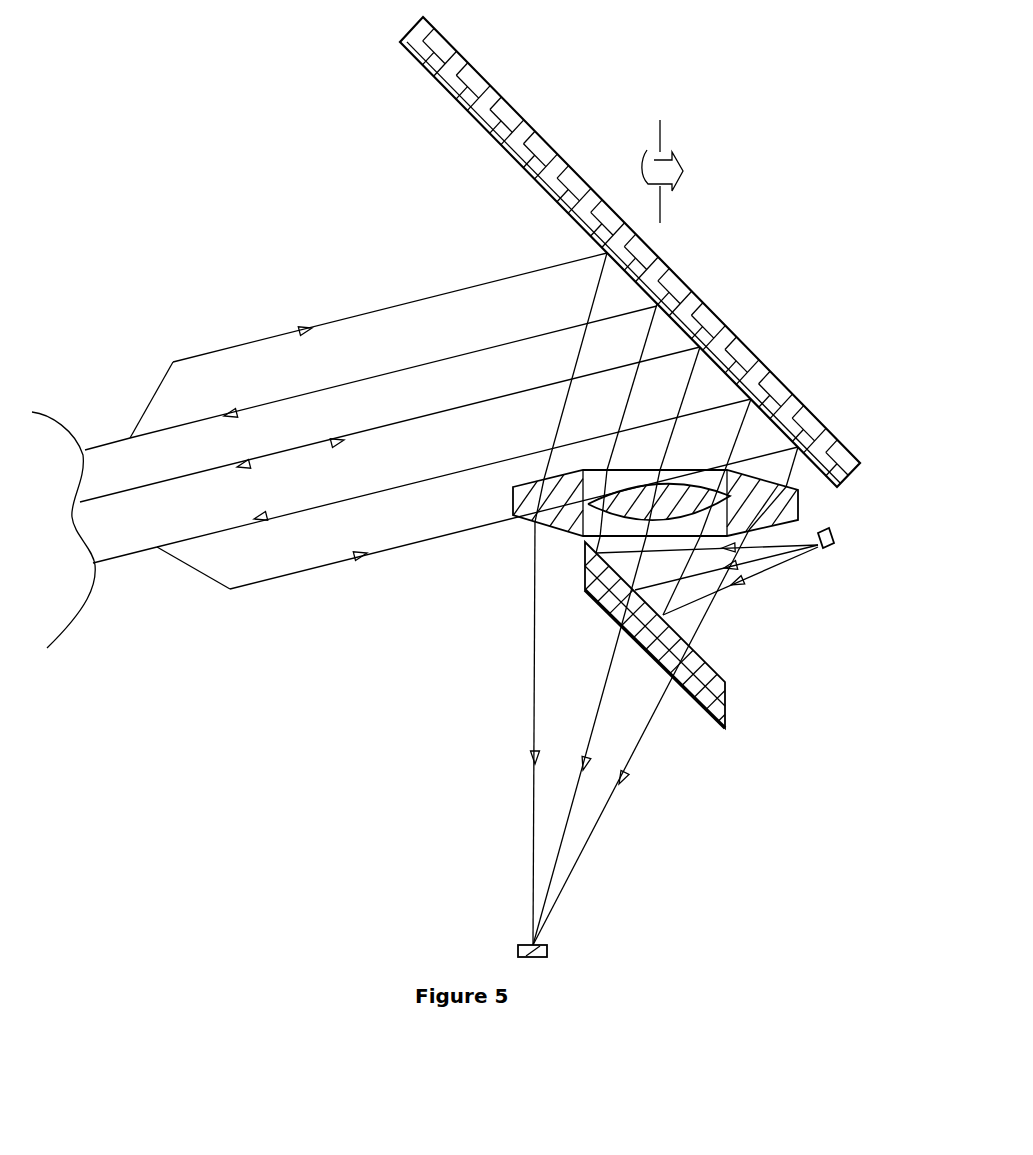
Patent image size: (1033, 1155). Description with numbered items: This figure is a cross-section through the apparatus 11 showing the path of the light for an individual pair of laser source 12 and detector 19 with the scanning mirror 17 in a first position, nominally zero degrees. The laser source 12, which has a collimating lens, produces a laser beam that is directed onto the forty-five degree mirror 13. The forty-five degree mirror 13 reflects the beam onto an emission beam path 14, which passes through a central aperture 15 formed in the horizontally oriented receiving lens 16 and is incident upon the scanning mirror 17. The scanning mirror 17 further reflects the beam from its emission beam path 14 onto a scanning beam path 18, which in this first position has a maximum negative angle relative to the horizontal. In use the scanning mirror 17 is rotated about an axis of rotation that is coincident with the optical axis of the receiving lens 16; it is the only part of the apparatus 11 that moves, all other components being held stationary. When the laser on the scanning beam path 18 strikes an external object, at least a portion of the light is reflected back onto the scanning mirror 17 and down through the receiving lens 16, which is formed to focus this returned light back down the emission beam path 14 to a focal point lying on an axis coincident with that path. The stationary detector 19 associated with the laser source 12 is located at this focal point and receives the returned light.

The apparatus 11 is at (370, 669).
The laser source 12 is at (827, 550).
The 45° mirror 13 is at (720, 710).
The emission beam path 14 is at (695, 385).
The central aperture 15 is at (693, 487).
The receiving lens 16 is at (533, 520).
The scanning mirror 17 is at (705, 318).
The scanning beam path 18 is at (148, 493).
The detector 19 is at (555, 943).